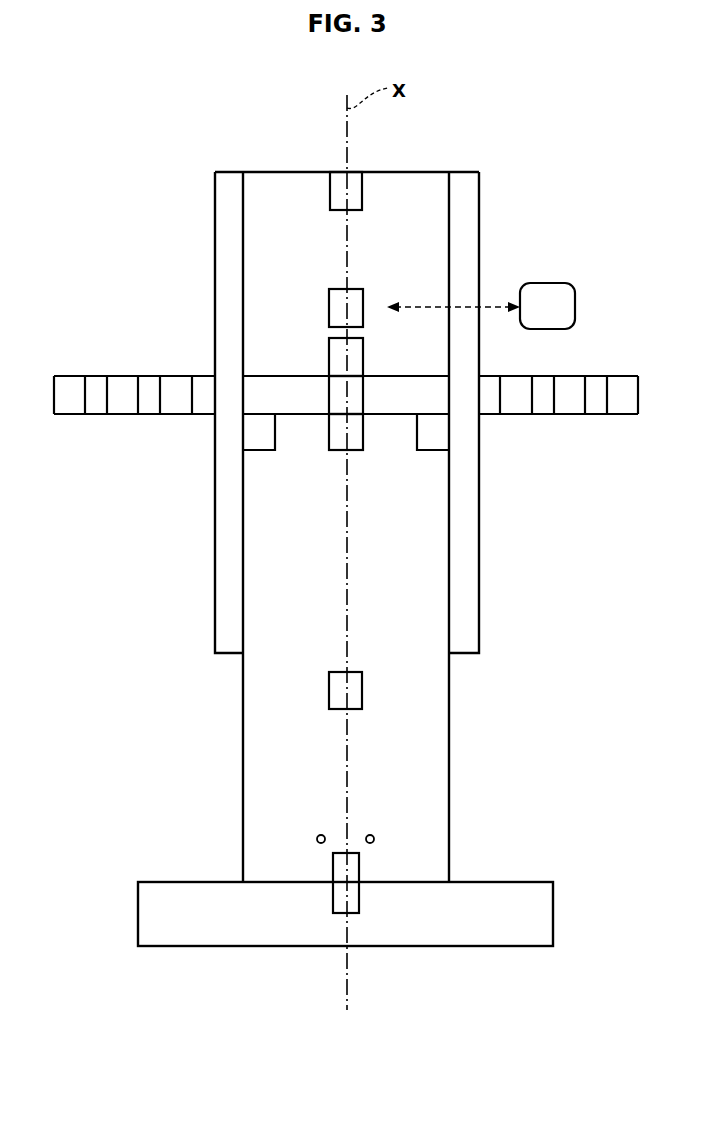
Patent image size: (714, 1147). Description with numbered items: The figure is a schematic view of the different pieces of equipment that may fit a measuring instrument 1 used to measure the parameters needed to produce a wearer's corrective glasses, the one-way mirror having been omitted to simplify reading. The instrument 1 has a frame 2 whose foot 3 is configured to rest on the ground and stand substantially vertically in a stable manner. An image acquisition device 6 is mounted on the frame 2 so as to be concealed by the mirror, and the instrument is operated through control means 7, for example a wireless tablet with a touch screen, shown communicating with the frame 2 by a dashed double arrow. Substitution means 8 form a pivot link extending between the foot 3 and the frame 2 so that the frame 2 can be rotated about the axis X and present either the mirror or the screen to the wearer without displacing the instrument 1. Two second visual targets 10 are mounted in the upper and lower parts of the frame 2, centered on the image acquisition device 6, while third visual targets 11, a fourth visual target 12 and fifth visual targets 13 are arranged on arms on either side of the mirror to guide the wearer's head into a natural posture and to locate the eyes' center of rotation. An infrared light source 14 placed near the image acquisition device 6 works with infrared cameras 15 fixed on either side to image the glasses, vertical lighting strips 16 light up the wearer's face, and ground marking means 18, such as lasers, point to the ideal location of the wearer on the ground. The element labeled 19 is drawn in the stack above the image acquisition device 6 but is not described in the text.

The measuring instrument 1 is at (613, 242).
The frame 2 is at (384, 520).
The foot 3 is at (384, 915).
The image acquisition device 6 is at (340, 405).
The control means 7 is at (541, 316).
The substitution means 8 is at (340, 892).
The second visual target 10 is at (337, 202).
The third visual target 11 is at (61, 404).
The fourth visual target 12 is at (167, 404).
The fifth visual target 13 is at (337, 318).
The infrared light source 14 is at (337, 443).
The infrared camera 15 is at (113, 404).
The lighting strip 16 is at (220, 520).
The ground marking means 18 is at (325, 836).
The interface unit 19 is at (337, 368).